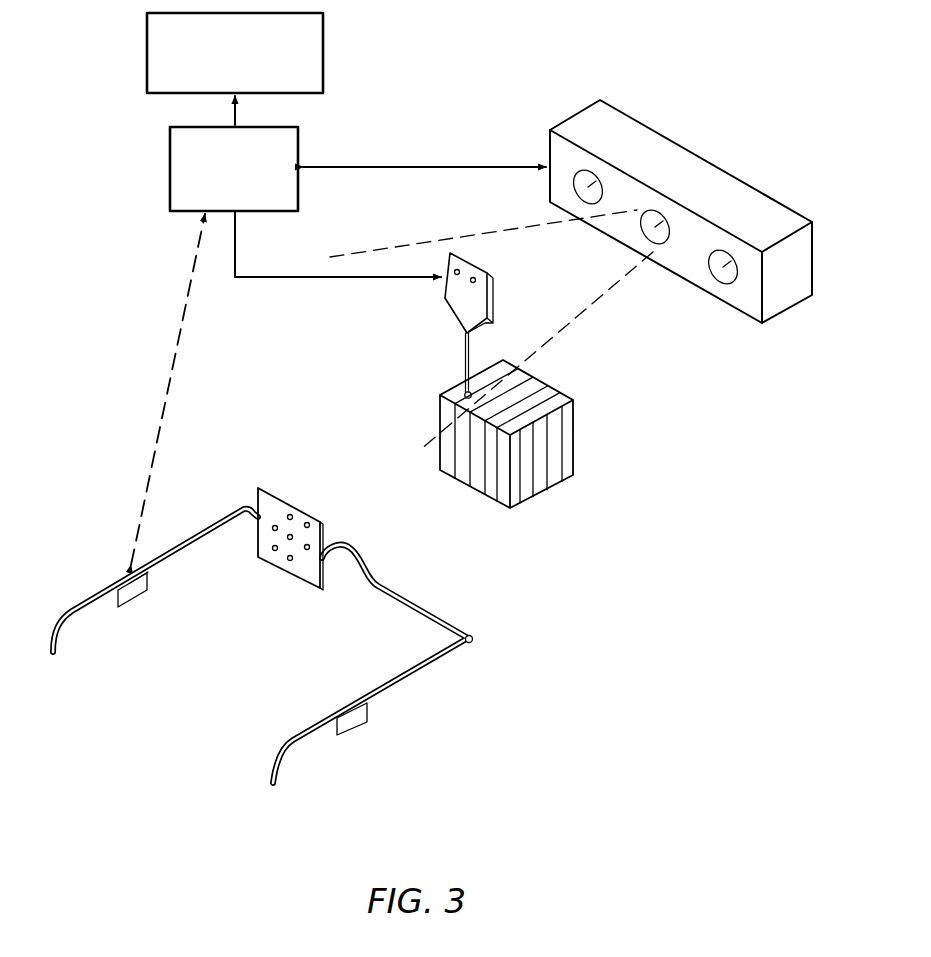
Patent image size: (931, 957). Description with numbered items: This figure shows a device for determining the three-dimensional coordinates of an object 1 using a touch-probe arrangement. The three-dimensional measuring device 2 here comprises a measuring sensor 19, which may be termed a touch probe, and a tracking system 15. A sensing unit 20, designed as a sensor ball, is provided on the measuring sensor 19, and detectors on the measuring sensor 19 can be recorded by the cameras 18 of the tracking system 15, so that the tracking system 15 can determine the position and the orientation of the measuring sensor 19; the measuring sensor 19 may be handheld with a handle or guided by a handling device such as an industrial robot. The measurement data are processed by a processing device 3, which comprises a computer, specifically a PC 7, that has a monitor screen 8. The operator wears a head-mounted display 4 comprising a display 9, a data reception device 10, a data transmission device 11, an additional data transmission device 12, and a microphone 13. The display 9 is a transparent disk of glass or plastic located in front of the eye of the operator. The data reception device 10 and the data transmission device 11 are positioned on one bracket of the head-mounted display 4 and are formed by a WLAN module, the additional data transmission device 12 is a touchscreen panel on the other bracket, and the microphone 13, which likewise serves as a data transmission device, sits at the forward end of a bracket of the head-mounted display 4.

The object 1 is at (492, 478).
The 3D measuring device 2 is at (651, 198).
The processing device 3 is at (360, 97).
The head-mounted display 4 is at (284, 646).
The PC 7 is at (298, 146).
The monitor screen 8 is at (323, 54).
The display 9 is at (312, 577).
The data reception device 10 is at (127, 596).
The data transmission device 11 is at (140, 586).
The additional data transmission device 12 is at (352, 724).
The microphone 13 is at (474, 646).
The tracking system 15 is at (651, 198).
The cameras 18 is at (588, 192).
The measuring sensor 19 is at (421, 326).
The sensing unit 20 is at (463, 395).